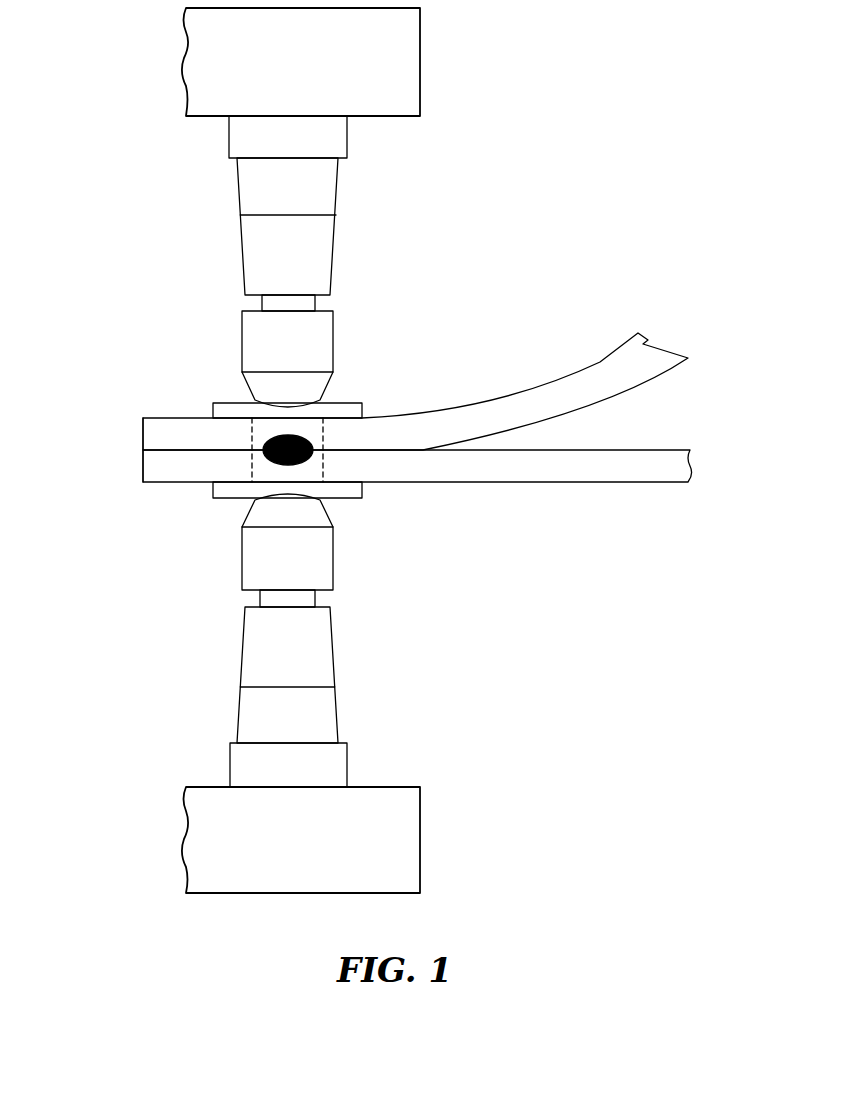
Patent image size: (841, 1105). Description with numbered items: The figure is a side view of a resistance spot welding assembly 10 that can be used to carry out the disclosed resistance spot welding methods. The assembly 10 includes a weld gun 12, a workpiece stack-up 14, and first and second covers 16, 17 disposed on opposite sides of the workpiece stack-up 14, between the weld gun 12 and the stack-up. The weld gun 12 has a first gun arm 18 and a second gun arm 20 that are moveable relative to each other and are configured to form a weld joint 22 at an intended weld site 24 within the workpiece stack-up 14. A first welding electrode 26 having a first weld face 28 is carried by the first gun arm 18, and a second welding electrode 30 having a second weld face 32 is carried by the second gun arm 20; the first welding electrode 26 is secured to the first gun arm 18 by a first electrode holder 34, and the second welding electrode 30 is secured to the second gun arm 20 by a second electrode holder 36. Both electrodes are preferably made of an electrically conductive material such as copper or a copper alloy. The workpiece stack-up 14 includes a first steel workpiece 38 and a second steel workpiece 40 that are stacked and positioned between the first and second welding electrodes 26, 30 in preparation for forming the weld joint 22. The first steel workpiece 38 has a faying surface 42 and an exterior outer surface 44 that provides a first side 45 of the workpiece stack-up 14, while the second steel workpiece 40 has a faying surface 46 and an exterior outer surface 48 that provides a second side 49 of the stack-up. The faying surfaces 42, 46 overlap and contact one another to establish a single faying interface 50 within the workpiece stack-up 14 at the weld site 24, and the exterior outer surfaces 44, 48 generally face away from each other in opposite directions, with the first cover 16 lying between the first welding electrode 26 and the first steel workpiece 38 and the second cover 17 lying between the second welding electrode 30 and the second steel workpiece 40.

The resistance spot welding assembly 10 is at (117, 193).
The weld gun 12 is at (180, 859).
The workpiece stack-up 14 is at (138, 451).
The first cover 16 is at (365, 406).
The second cover 17 is at (362, 490).
The first gun arm 18 is at (420, 62).
The second gun arm 20 is at (420, 843).
The weld joint 22 is at (305, 463).
The weld site 24 is at (325, 462).
The first welding electrode 26 is at (240, 352).
The first weld face 28 is at (333, 403).
The second welding electrode 30 is at (242, 553).
The second weld face 32 is at (250, 498).
The first electrode holder 34 is at (335, 253).
The second electrode holder 36 is at (330, 650).
The first steel workpiece 38 is at (610, 355).
The second steel workpiece 40 is at (640, 482).
The faying surface 42 is at (662, 375).
The exterior outer surface 44 is at (560, 383).
The first side 45 is at (165, 412).
The faying surface 46 is at (617, 448).
The exterior outer surface 48 is at (592, 482).
The second side 49 is at (163, 490).
The faying interface 50 is at (252, 450).